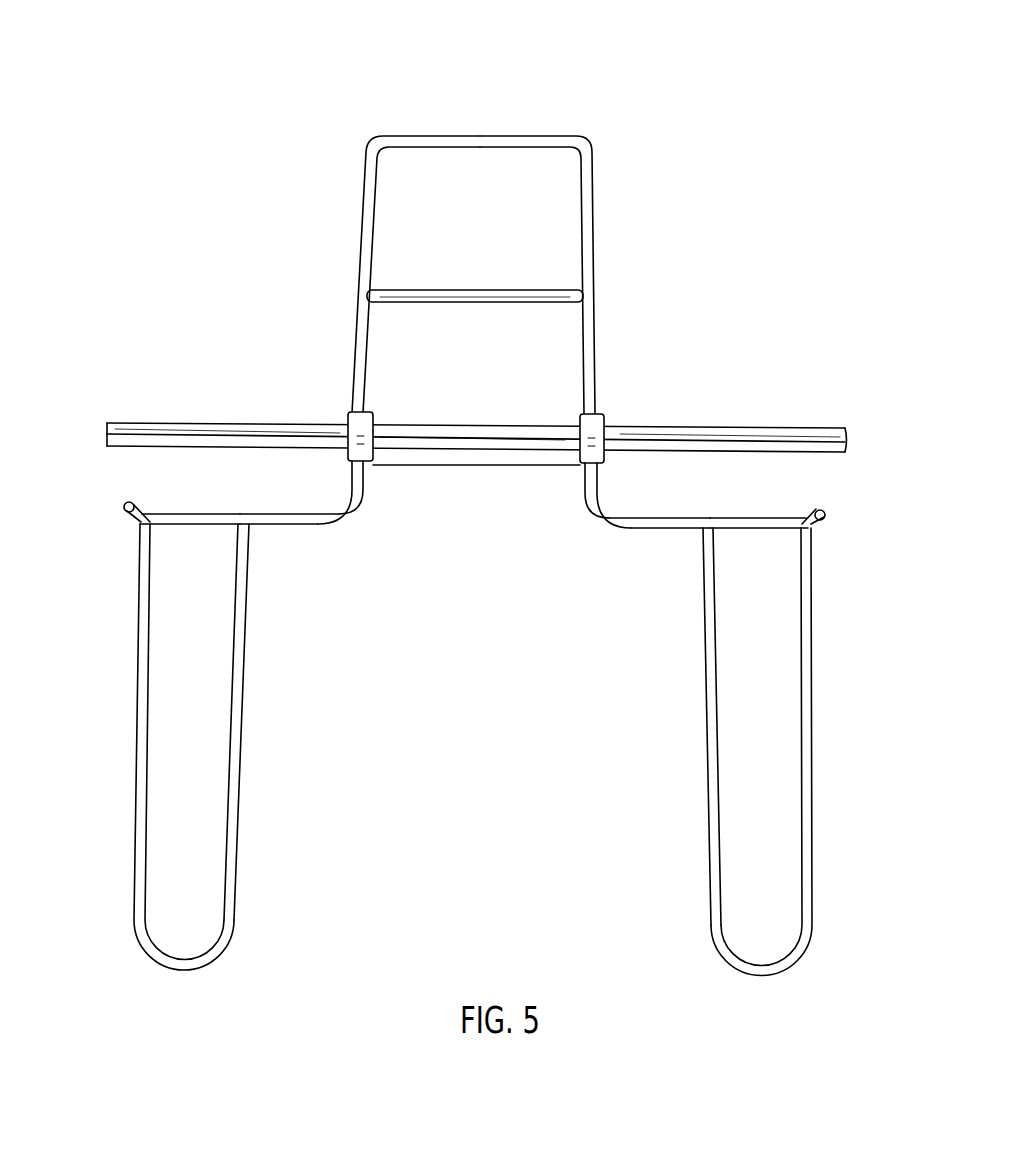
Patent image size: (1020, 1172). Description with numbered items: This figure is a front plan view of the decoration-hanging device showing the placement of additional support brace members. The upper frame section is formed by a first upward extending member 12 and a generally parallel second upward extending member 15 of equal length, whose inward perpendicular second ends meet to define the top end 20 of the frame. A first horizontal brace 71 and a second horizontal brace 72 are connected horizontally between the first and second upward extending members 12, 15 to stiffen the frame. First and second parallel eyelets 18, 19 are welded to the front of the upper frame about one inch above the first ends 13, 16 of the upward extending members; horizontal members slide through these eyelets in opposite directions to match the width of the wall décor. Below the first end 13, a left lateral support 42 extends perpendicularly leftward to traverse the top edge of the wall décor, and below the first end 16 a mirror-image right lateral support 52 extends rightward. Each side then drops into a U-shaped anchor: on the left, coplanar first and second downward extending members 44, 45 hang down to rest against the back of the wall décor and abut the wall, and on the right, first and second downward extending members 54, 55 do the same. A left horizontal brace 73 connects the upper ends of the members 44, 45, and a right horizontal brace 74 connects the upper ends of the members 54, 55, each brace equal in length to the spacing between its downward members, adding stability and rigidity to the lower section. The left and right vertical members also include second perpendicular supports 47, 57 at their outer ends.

The top end 20 is at (475, 240).
The first upward extending member 12 is at (358, 330).
The second upward extending member 15 is at (600, 335).
The second horizontal brace 72 is at (508, 290).
The first parallel eyelet 18 is at (340, 424).
The second parallel eyelet 19 is at (616, 423).
The first horizontal brace 71 is at (537, 478).
The first end 13 is at (357, 510).
The first end 16 is at (590, 513).
The left lateral support 42 is at (298, 526).
The right lateral support 52 is at (672, 528).
The left horizontal brace 73 is at (185, 513).
The right horizontal brace 74 is at (767, 520).
The first downward extending member 44 is at (237, 780).
The second downward extending member 45 is at (135, 802).
The first downward extending member 54 is at (710, 835).
The second downward extending member 55 is at (812, 780).
The second perpendicular support 47 is at (128, 518).
The second perpendicular support 57 is at (815, 526).